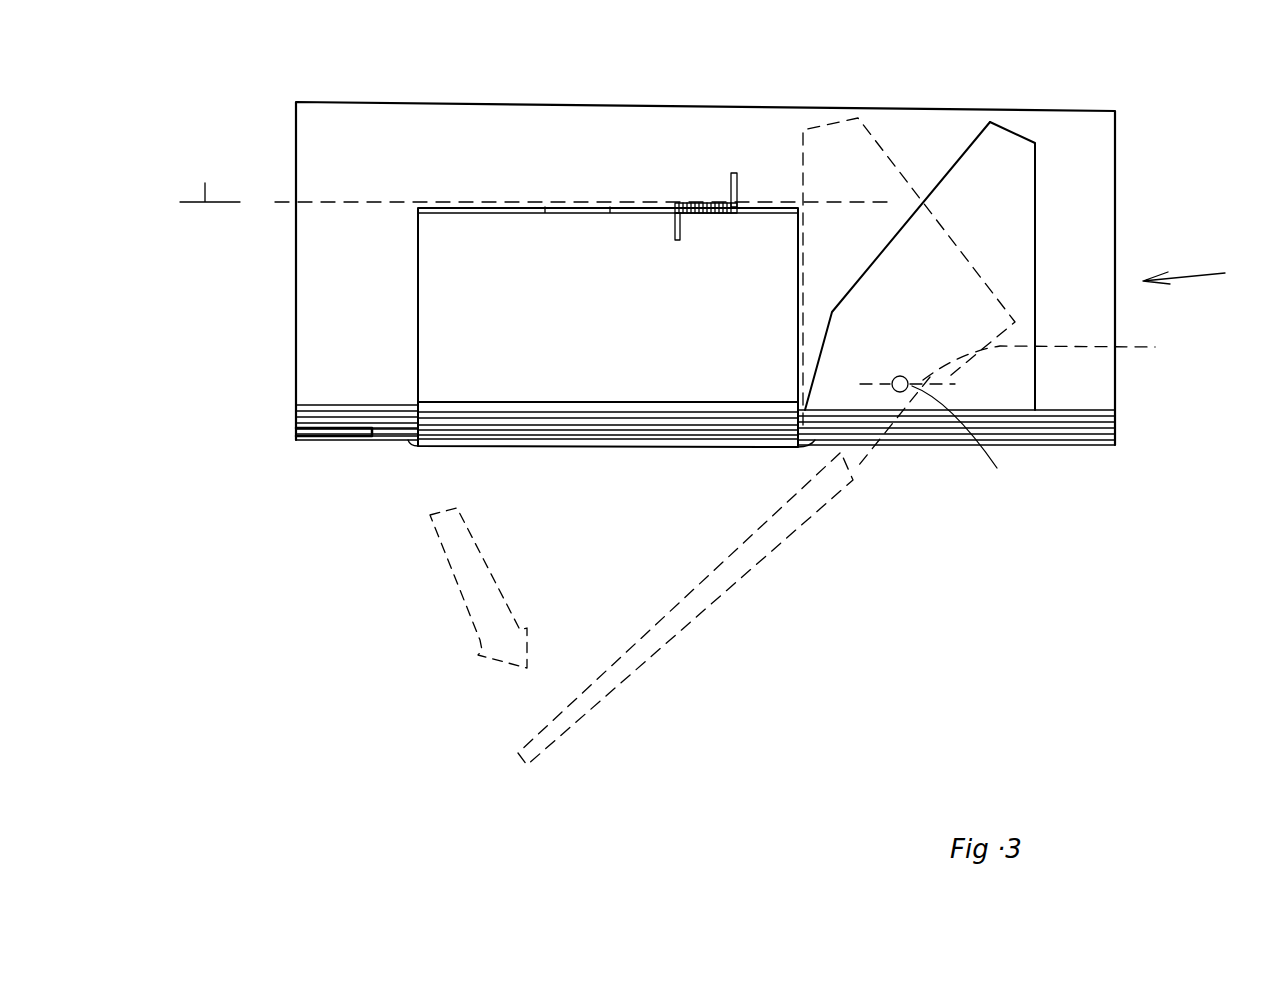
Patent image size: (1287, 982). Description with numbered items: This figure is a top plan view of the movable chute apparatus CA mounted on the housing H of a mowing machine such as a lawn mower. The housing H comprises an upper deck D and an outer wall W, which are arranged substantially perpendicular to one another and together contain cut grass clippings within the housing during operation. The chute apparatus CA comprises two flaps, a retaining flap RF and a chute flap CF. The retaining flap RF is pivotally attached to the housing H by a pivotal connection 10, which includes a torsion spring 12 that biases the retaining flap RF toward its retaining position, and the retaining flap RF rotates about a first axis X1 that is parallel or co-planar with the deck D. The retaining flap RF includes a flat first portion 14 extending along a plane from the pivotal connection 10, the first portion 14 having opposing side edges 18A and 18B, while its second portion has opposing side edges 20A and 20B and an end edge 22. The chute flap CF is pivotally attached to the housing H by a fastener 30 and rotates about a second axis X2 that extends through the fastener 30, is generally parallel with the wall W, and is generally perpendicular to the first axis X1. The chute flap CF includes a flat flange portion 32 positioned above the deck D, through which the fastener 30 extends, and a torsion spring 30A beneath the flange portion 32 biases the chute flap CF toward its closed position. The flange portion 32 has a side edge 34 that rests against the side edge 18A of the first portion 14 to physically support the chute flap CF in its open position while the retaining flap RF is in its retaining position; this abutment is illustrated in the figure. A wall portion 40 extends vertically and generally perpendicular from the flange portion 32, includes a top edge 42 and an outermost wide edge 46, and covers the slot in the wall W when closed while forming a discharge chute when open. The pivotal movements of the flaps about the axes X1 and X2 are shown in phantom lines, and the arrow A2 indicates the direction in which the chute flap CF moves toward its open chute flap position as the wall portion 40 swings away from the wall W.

The pivotal connection 10 is at (420, 205).
The torsion spring 12 is at (710, 203).
The first portion 14 is at (530, 318).
The side edge 18A is at (803, 252).
The side edge 18B is at (418, 278).
The side edge 20A is at (820, 445).
The side edge 20B is at (405, 445).
The end edge 22 is at (612, 448).
The fastener 30 is at (967, 445).
The torsion spring 30A is at (1066, 356).
The flange portion 32 is at (1000, 208).
The side edge 34 is at (947, 175).
The wall portion 40 is at (613, 697).
The top edge 42 is at (400, 430).
The outermost wide edge 46 is at (362, 430).
The upper deck D is at (532, 146).
The housing H is at (296, 255).
The retaining flap RF is at (418, 352).
The outer wall W is at (1068, 447).
The chute apparatus CA is at (1206, 276).
The first axis X1 is at (536, 167).
The second axis X2 is at (897, 392).
The chute flap CF is at (905, 410).
The arrow A2 is at (452, 578).